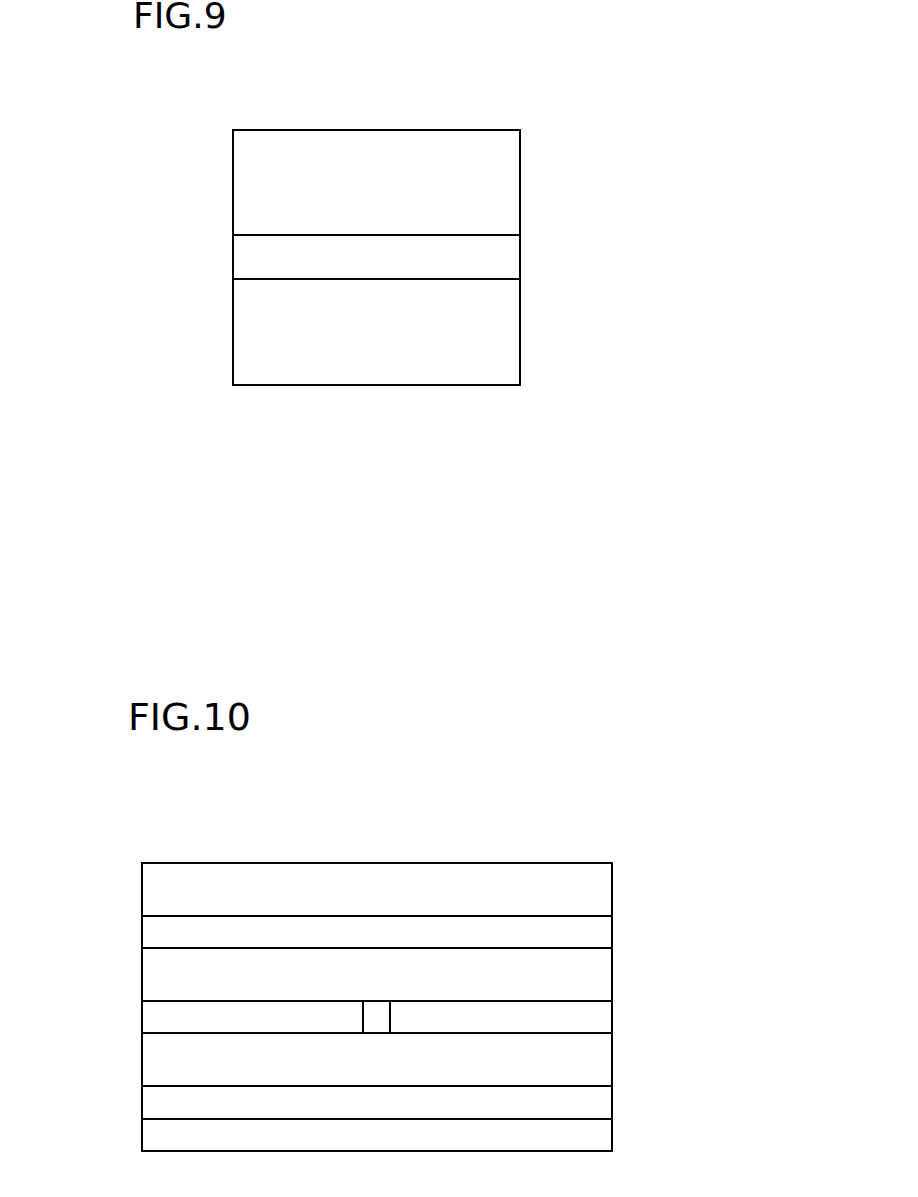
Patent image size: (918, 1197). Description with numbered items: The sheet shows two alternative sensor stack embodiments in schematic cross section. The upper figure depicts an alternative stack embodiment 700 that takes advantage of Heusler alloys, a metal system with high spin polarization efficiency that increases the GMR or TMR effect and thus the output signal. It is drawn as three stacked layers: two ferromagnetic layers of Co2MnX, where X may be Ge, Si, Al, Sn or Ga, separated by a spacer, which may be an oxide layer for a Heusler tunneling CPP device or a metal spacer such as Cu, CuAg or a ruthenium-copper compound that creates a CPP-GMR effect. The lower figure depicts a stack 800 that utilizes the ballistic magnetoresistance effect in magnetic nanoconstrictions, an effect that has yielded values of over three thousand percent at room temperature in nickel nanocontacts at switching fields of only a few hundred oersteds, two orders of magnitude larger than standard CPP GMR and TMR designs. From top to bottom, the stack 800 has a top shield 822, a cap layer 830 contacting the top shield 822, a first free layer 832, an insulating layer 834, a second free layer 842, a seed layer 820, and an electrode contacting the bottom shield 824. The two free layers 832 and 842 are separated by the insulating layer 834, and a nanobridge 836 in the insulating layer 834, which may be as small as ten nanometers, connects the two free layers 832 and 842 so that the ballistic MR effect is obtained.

In FIG. 9, the alternative stack embodiment 700 is at (561, 335).
In FIG. 10, the stack 800 is at (592, 811).
In FIG. 10, the top shield 822 is at (152, 893).
In FIG. 10, the cap layer 830 is at (152, 930).
In FIG. 10, the first free layer 832 is at (150, 973).
In FIG. 10, the insulating layer 834 is at (152, 1014).
In FIG. 10, the nanobridge 836 is at (377, 1017).
In FIG. 10, the second free layer 842 is at (152, 1052).
In FIG. 10, the seed layer 820 is at (152, 1094).
In FIG. 10, the bottom shield 824 is at (152, 1133).